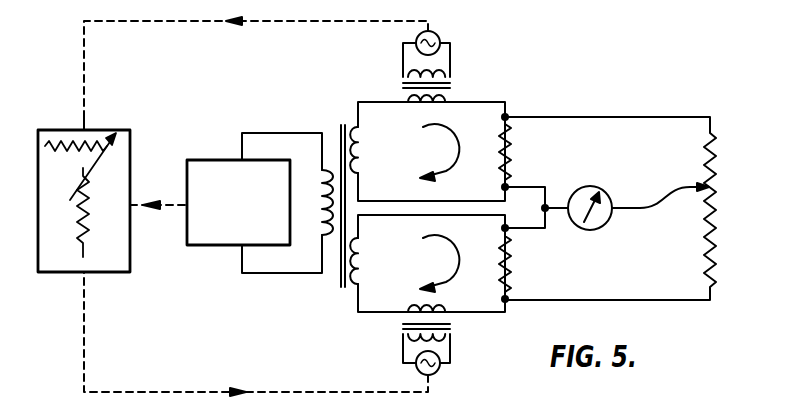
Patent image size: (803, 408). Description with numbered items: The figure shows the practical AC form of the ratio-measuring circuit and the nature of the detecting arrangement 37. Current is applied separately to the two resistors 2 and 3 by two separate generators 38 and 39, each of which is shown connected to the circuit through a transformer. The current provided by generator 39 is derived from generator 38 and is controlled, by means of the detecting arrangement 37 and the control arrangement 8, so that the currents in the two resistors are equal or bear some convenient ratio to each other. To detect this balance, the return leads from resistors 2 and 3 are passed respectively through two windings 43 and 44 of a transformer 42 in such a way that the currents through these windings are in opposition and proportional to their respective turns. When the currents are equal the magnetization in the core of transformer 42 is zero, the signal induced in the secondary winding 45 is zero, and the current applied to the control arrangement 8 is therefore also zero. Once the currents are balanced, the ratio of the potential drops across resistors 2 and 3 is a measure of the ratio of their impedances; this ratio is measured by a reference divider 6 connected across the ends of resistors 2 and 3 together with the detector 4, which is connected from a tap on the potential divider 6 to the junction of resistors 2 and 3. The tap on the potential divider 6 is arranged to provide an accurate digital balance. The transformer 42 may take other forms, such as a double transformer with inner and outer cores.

The resistor 2 is at (510, 158).
The resistor 3 is at (510, 270).
The detector 4 is at (612, 196).
The reference divider 6 is at (714, 232).
The control arrangement 8 is at (130, 249).
The detecting arrangement 37 is at (213, 247).
The generator 38 is at (455, 73).
The generator 39 is at (453, 338).
The transformer 42 is at (341, 116).
The winding 43 is at (366, 161).
The winding 44 is at (365, 268).
The secondary winding 45 is at (333, 242).